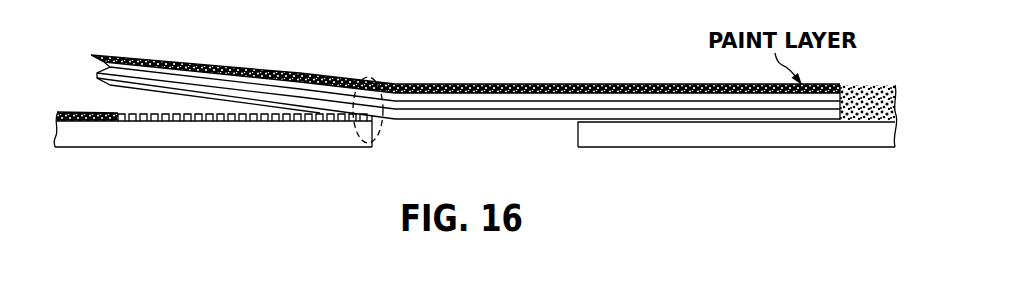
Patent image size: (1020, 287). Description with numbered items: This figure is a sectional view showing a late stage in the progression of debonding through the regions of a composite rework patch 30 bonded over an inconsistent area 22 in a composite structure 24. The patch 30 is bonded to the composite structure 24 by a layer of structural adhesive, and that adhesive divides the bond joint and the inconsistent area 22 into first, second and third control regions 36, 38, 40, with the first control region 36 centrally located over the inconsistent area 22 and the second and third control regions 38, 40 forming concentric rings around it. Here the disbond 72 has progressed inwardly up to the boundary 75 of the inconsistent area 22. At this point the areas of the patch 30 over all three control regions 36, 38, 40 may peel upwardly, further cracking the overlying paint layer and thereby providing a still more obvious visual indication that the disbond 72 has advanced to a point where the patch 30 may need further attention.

The inconsistent area 22 is at (420, 142).
The composite structure 24 is at (90, 132).
The composite rework patch 30 is at (582, 65).
The first control region 36 is at (370, 73).
The second control region 38 is at (370, 73).
The third control region 40 is at (370, 73).
The disbond 72 is at (128, 99).
The boundary of the inconsistent area 75 is at (367, 71).